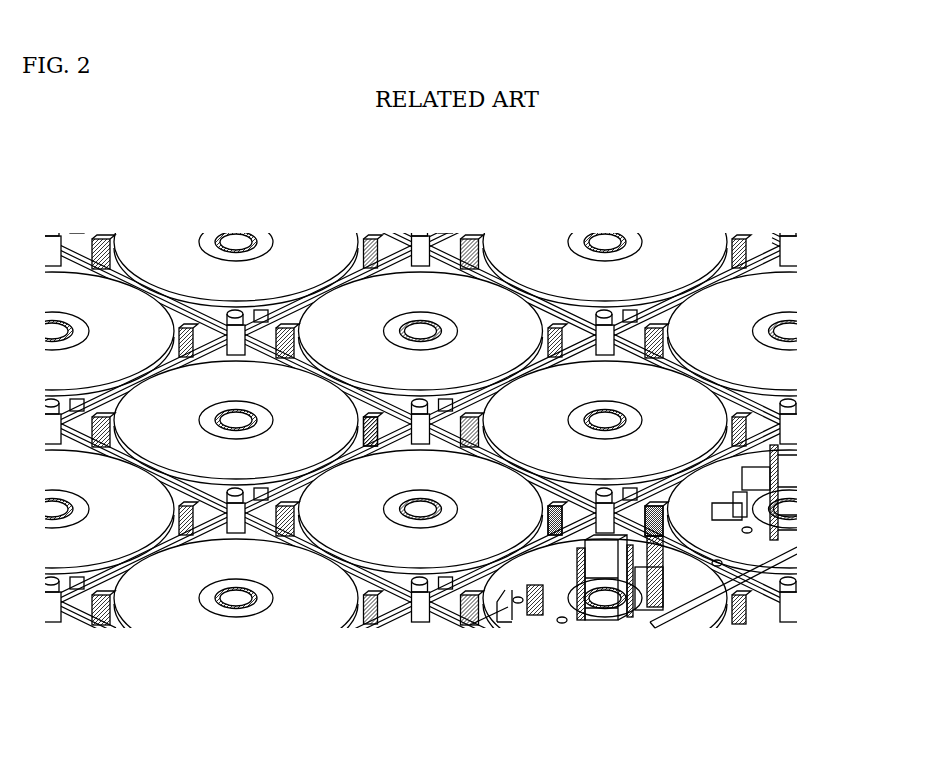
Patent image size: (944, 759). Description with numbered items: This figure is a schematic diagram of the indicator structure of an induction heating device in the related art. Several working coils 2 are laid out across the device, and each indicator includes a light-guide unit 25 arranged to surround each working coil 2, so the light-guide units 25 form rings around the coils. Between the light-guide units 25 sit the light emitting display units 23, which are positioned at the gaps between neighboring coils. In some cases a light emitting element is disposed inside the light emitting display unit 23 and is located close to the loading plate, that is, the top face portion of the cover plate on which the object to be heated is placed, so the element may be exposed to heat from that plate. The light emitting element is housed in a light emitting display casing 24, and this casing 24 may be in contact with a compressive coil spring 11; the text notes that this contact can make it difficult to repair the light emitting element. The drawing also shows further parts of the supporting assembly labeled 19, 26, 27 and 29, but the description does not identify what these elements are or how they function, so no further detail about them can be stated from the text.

The working coil 2 is at (452, 470).
The compressive coil spring 11 is at (713, 580).
The bracket 19 is at (680, 583).
The light emitting display unit 23 is at (432, 400).
The light emitting display casing 24 is at (385, 400).
The light-guide unit 25 is at (548, 497).
The rail 26 is at (600, 470).
The support block 27 is at (573, 585).
The actuator 29 is at (507, 592).